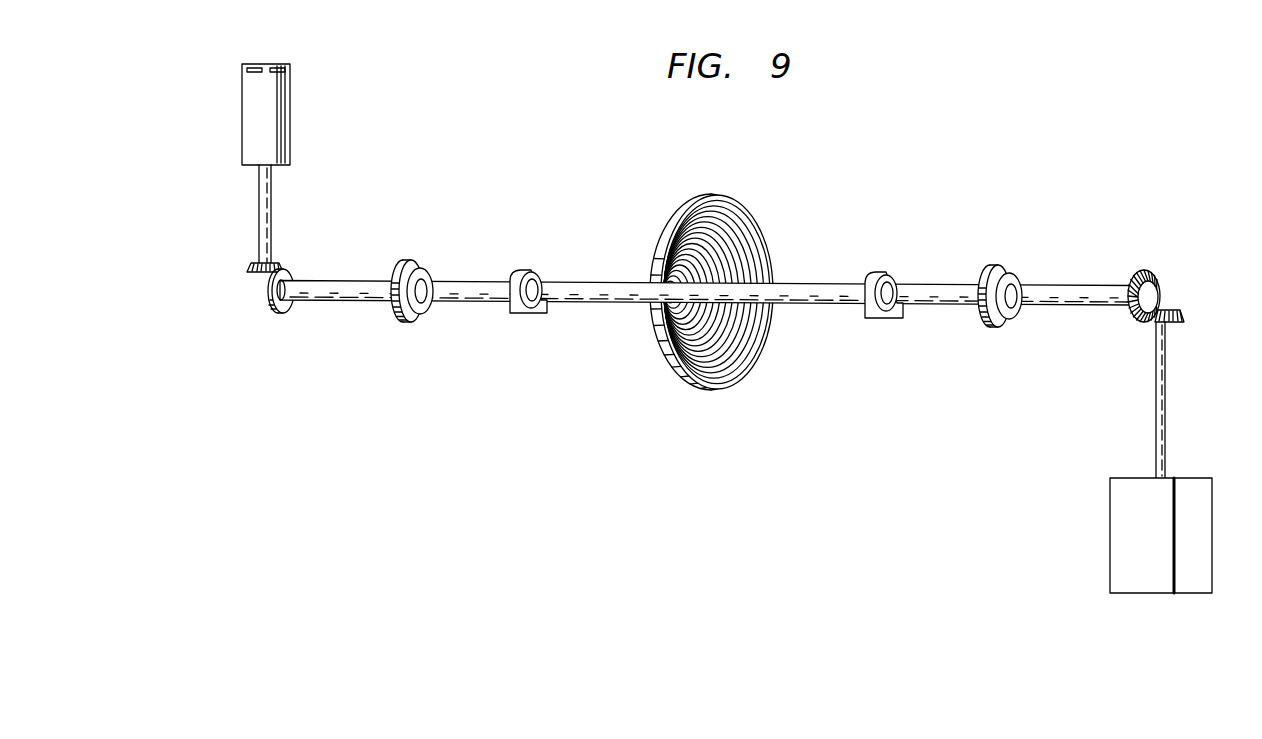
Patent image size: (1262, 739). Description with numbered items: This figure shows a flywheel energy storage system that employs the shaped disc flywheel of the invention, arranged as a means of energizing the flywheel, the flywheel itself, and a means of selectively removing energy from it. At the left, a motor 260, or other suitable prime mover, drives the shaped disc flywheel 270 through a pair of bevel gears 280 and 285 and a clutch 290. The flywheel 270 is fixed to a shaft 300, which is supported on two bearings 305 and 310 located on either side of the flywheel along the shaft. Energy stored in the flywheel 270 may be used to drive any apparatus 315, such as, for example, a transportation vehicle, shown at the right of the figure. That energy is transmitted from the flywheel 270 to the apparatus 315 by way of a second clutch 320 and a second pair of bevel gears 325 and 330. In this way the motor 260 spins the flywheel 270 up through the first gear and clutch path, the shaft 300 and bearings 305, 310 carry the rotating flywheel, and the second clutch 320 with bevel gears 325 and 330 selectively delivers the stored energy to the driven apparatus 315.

The motor 260 is at (273, 122).
The shaped disc flywheel 270 is at (752, 218).
The bevel gear 280 is at (247, 270).
The bevel gear 285 is at (285, 313).
The clutch 290 is at (420, 257).
The shaft 300 is at (607, 300).
The bearing 305 is at (512, 312).
The bearing 310 is at (882, 318).
The apparatus 315 is at (1110, 507).
The second clutch 320 is at (1005, 262).
The bevel gear 325 is at (1150, 278).
The bevel gear 330 is at (1174, 321).